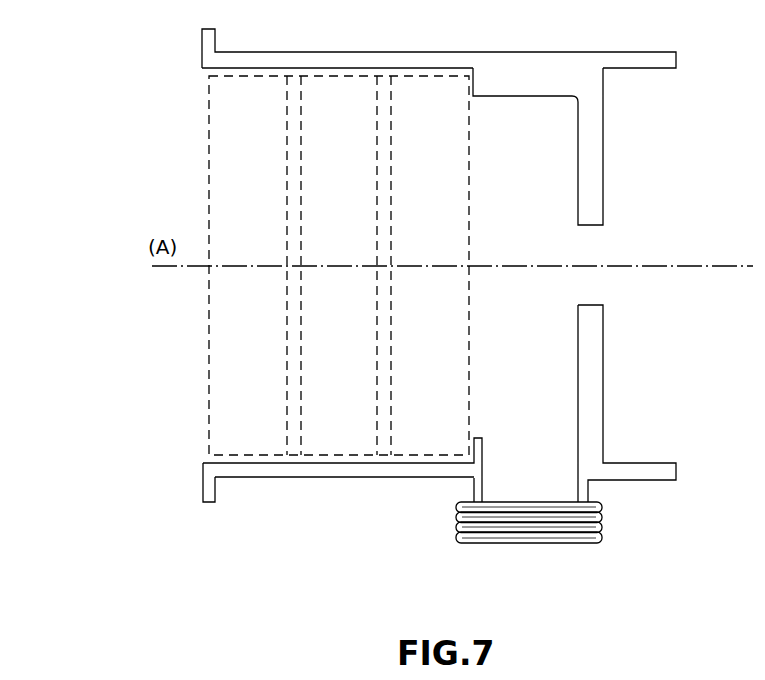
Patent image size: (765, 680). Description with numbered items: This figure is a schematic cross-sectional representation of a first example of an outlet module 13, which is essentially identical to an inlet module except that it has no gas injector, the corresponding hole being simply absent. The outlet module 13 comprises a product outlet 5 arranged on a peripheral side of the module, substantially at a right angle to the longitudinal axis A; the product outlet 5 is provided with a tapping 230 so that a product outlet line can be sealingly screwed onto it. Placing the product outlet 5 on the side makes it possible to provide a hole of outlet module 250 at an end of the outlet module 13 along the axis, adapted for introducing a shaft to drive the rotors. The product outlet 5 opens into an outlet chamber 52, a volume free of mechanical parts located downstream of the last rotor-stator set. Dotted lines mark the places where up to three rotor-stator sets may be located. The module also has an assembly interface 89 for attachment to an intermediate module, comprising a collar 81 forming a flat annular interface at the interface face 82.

The outlet module 13 is at (458, 127).
The outlet chamber 52 is at (549, 145).
The hole of outlet module 250 is at (590, 283).
The tapping 230 is at (602, 520).
The product outlet 5 is at (566, 551).
The assembly interface 89 is at (259, 480).
The interface face 82 is at (203, 464).
The collar 81 is at (203, 498).